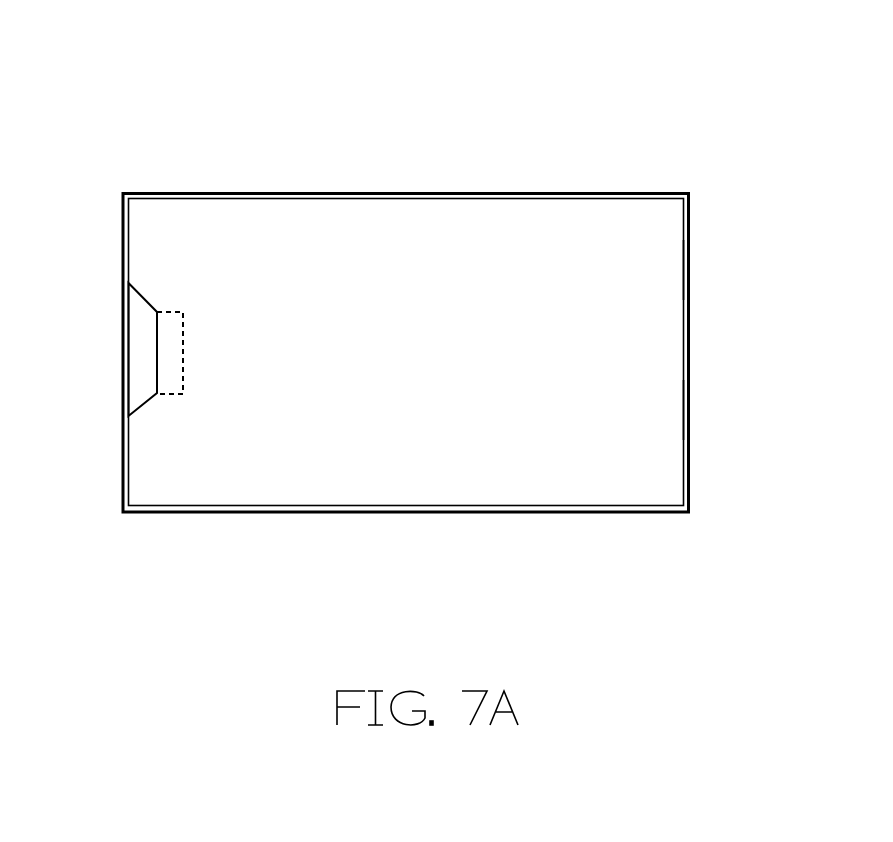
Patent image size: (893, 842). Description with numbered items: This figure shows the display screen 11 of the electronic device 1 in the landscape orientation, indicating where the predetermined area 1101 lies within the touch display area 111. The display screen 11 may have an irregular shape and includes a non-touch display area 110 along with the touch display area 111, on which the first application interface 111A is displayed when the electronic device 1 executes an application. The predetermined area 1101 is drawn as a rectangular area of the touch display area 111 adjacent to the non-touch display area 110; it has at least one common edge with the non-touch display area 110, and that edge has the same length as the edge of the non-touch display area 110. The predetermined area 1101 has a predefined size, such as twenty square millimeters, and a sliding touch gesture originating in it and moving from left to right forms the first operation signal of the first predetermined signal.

The electronic device 1 is at (502, 118).
The display screen 11 is at (571, 195).
The touch display area 111 is at (666, 297).
The first application interface 111A is at (660, 437).
The non-touch display area 110 is at (140, 340).
The predetermined area 1101 is at (170, 327).